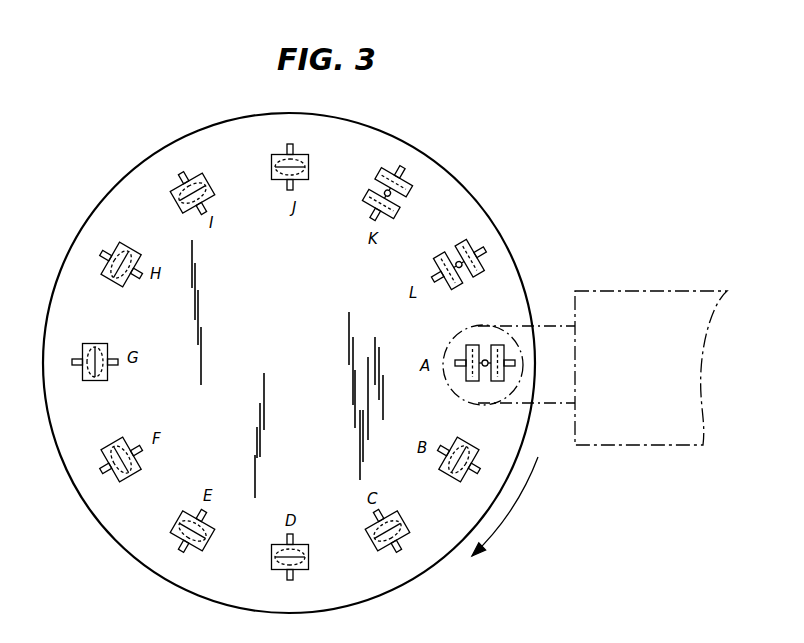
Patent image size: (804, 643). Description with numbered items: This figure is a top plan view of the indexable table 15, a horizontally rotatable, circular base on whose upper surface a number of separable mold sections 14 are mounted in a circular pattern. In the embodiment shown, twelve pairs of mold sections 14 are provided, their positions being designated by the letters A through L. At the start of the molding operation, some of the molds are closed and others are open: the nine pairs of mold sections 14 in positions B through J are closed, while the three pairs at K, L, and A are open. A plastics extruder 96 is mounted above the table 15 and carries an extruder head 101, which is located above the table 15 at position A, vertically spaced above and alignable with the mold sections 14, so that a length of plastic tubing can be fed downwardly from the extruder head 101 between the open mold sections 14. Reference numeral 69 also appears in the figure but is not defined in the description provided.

The separable mold sections 14 is at (426, 171).
The indexable table 15 is at (477, 217).
The holder half section 69 is at (404, 167).
The plastics extruder 96 is at (692, 303).
The extruder head 101 is at (489, 330).